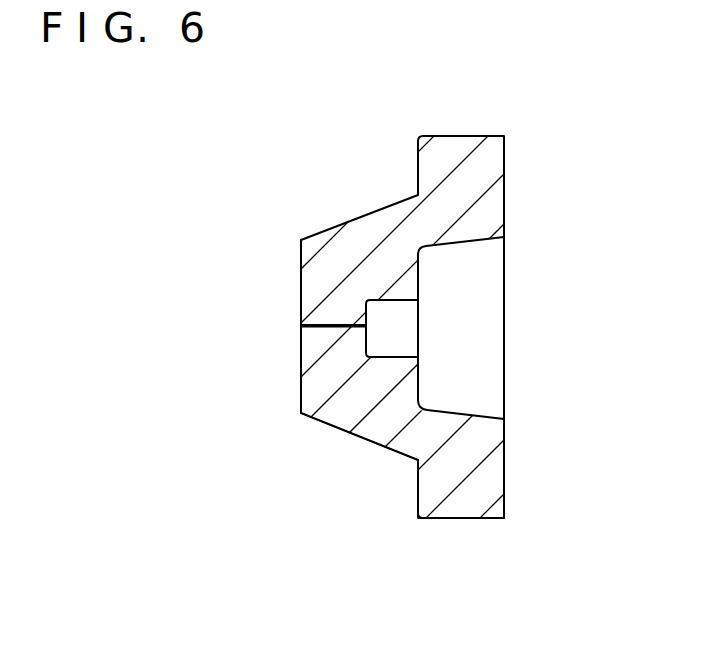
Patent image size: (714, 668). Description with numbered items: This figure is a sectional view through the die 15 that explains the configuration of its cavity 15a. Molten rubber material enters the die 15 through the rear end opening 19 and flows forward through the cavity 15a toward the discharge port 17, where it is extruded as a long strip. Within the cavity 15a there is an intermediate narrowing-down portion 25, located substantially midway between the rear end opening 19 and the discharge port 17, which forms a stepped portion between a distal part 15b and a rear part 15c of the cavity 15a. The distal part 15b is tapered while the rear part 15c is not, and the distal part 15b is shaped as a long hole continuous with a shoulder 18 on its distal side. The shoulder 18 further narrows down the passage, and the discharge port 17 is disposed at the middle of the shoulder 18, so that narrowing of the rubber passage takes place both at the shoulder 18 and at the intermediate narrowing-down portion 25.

The die 15 is at (361, 214).
The cavity 15a is at (430, 577).
The distal part of the cavity 15b is at (402, 352).
The rear part of the cavity 15c is at (433, 403).
The discharge port 17 is at (300, 327).
The shoulder 18 is at (380, 337).
The rear end opening 19 is at (492, 251).
The intermediate narrowing-down portion 25 is at (421, 390).